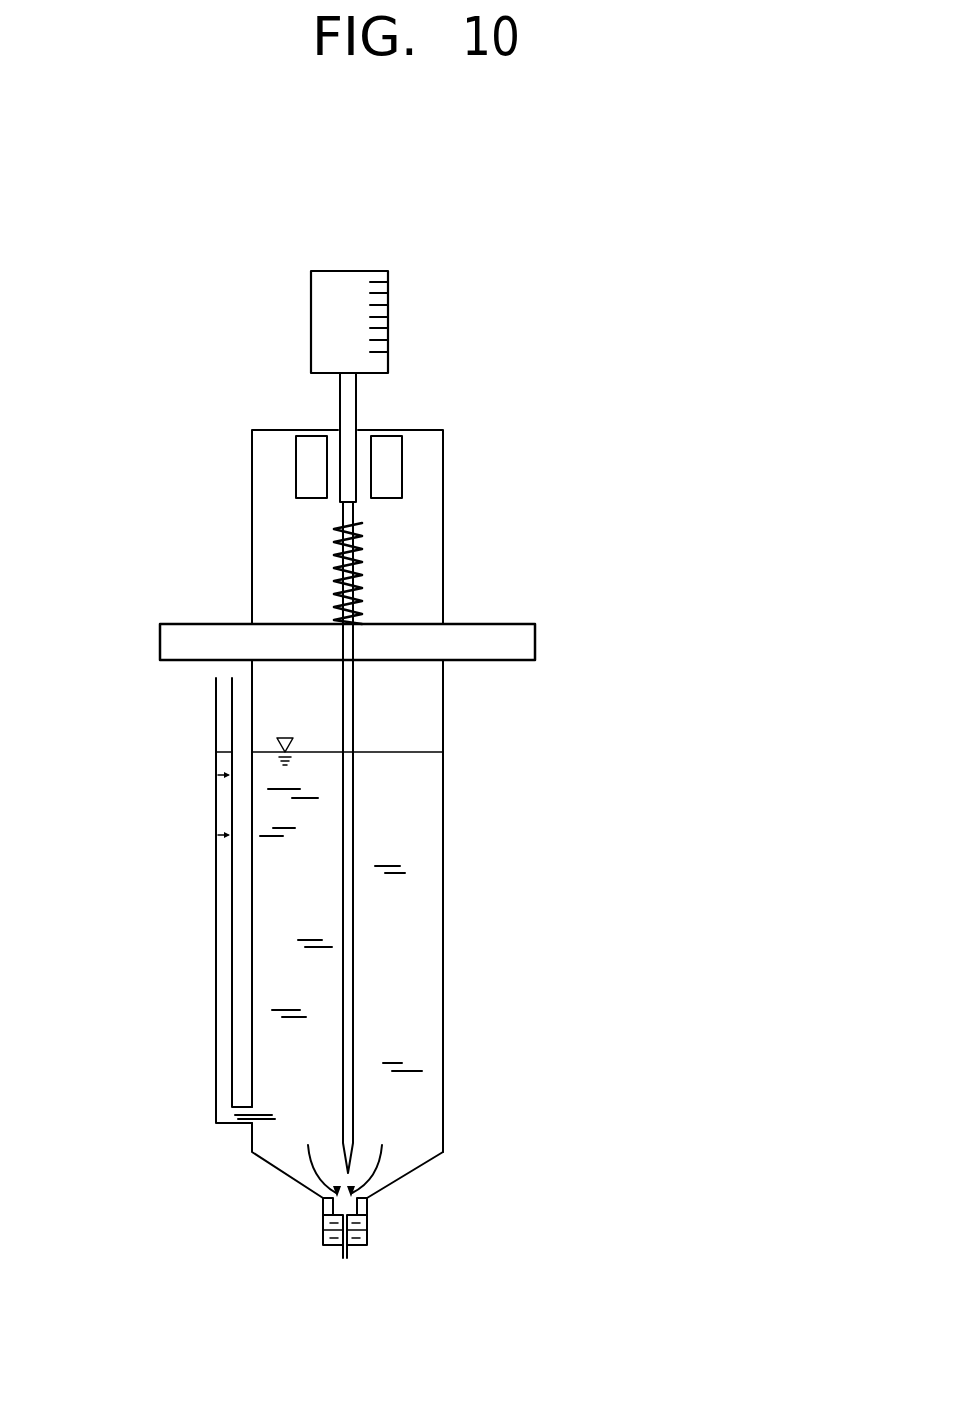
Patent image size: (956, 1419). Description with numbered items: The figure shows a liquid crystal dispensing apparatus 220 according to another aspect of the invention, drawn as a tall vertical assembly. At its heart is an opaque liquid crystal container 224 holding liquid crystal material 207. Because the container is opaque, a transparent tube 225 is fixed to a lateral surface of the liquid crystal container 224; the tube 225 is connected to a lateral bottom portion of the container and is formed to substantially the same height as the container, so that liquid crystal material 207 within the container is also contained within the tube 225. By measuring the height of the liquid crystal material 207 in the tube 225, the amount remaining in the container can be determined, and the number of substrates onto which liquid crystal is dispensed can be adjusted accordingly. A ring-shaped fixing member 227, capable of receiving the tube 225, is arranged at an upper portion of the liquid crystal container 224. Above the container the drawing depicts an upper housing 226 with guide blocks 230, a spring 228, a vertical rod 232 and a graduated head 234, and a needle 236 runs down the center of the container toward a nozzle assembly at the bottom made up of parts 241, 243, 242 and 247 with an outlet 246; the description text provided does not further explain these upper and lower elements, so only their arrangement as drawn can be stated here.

The dispensing apparatus 220 is at (446, 316).
The micrometer head 234 is at (325, 312).
The rod 232 is at (357, 403).
The housing 226 is at (446, 470).
The guide 230 is at (309, 473).
The spring 228 is at (342, 542).
The liquid crystal container 224 is at (443, 922).
The transparent tube 225 is at (215, 753).
The fixing member 227 is at (250, 808).
The liquid crystal material 207 is at (270, 897).
The needle 236 is at (352, 1012).
The upper nozzle block 241 is at (323, 1205).
The nozzle block 243 is at (367, 1218).
The lower nozzle block 242 is at (325, 1230).
The nozzle block 247 is at (367, 1242).
The outlet 246 is at (342, 1257).